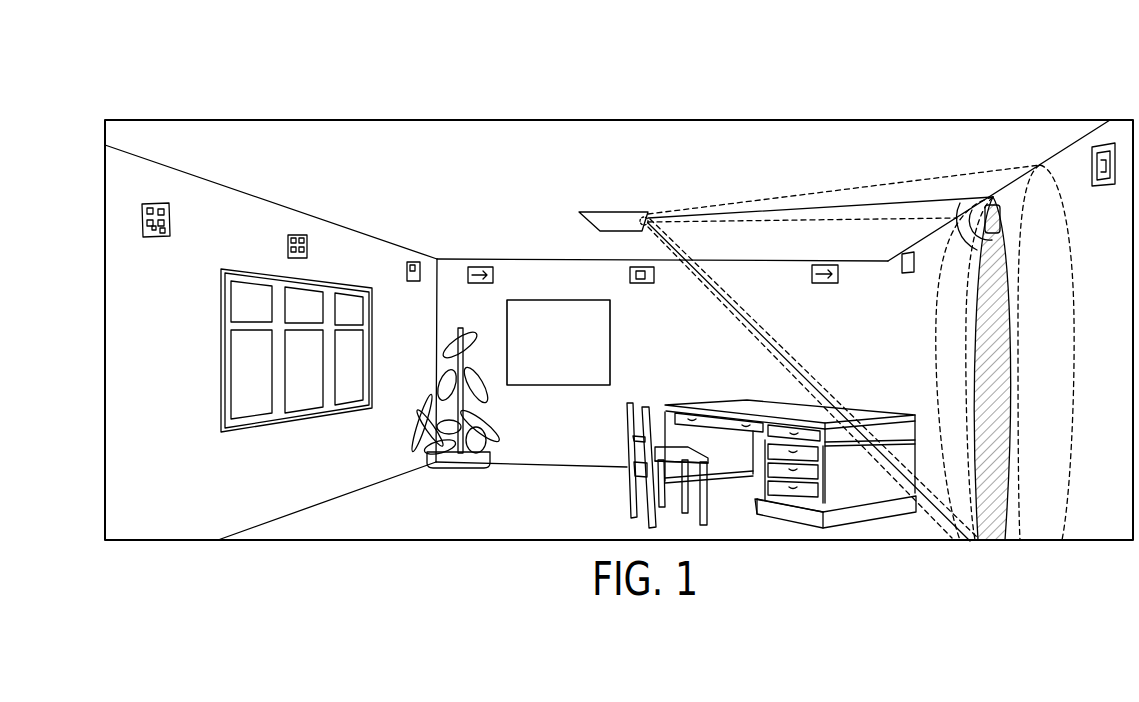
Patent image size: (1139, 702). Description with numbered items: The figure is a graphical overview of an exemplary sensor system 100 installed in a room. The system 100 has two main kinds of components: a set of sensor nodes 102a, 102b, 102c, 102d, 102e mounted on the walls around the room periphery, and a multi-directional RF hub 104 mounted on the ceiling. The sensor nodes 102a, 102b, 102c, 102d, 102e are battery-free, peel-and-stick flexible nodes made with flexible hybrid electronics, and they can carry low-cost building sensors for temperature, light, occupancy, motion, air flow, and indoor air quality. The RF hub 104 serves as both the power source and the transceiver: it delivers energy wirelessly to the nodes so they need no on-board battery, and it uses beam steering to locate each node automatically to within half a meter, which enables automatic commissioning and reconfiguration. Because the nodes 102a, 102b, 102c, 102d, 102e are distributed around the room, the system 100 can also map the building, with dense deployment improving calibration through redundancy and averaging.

The sensor system 100 is at (486, 105).
The sensor node 102a is at (151, 204).
The sensor node 102b is at (300, 234).
The sensor node 102c is at (413, 262).
The sensor node 102d is at (481, 266).
The sensor node 102e is at (1112, 142).
The multi-directional RF hub 104 is at (613, 210).